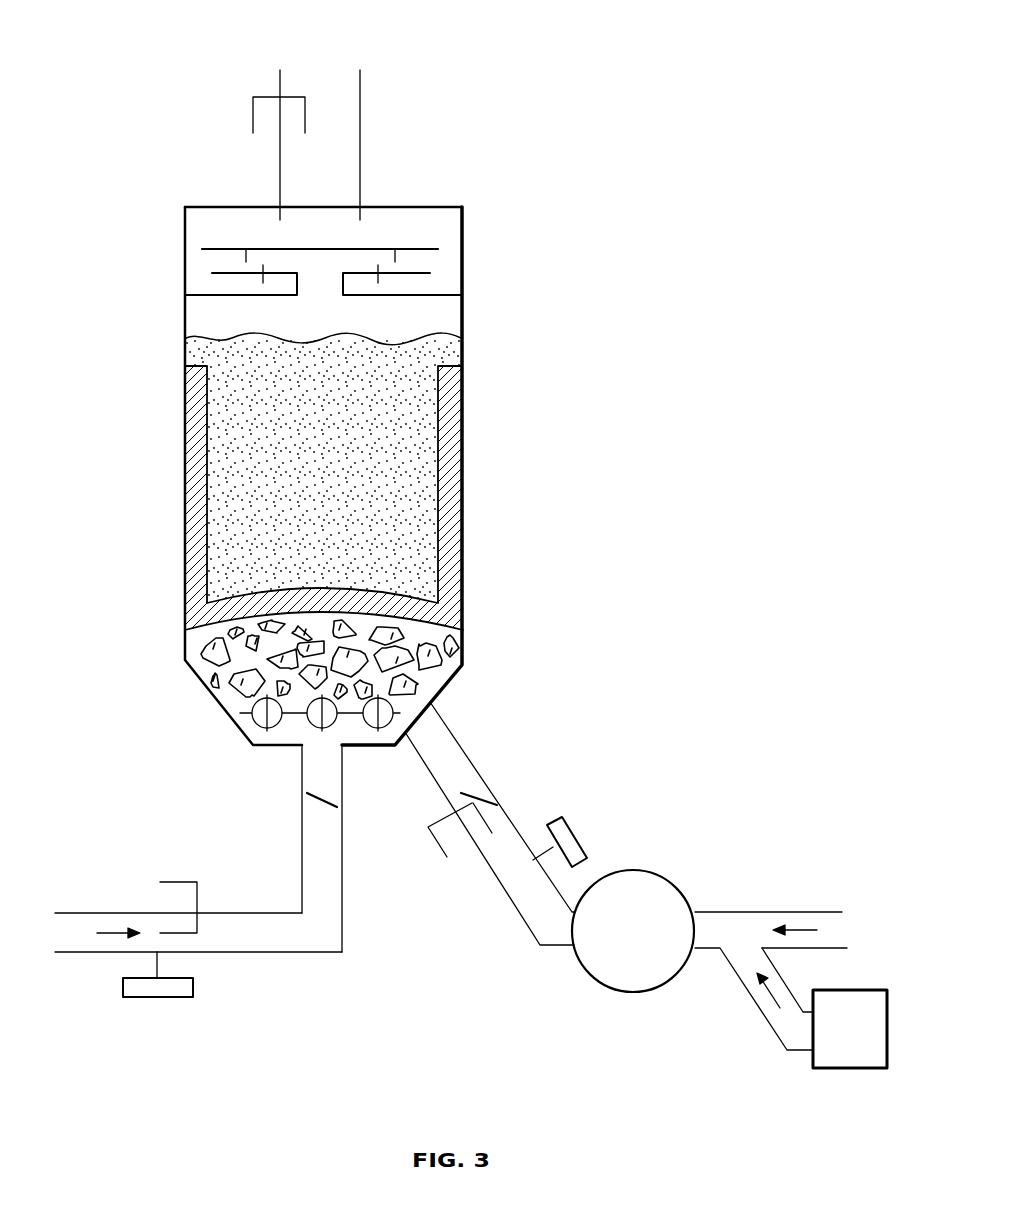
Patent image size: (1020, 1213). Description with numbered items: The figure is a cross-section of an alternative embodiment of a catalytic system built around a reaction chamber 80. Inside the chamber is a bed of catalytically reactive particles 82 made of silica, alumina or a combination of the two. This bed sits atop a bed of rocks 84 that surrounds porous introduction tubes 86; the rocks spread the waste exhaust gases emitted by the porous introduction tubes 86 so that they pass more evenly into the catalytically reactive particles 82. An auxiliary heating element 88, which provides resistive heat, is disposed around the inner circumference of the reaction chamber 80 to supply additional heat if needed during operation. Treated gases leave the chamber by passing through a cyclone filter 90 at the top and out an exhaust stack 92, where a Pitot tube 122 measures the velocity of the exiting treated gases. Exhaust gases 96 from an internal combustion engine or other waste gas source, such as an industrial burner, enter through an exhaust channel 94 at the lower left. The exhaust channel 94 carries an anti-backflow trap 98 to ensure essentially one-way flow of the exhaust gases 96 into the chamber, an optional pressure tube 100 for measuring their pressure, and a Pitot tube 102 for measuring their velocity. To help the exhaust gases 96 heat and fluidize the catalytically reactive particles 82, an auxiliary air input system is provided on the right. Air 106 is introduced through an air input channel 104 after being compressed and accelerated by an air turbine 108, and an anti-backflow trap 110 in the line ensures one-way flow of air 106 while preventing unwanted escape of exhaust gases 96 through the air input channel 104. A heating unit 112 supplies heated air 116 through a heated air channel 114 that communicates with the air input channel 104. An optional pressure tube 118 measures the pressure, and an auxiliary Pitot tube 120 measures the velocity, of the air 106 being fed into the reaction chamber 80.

The reaction chamber 80 is at (160, 432).
The catalytically reactive particles 82 is at (380, 427).
The bed of rocks 84 is at (435, 667).
The porous introduction tubes 86 is at (262, 713).
The auxiliary heating element 88 is at (204, 548).
The cyclone filter 90 is at (358, 265).
The exhaust stack 92 is at (332, 85).
The exhaust channel 94 is at (103, 913).
The exhaust gases 96 is at (113, 933).
The anti-backflow trap 98 is at (320, 803).
The pressure tube 100 is at (156, 1003).
The Pitot tube 102 is at (178, 882).
The air input channel 104 is at (840, 913).
The air 106 is at (795, 928).
The air turbine 108 is at (650, 942).
The anti-backflow trap 110 is at (480, 790).
The heating unit 112 is at (867, 1042).
The heated air channel 114 is at (770, 1030).
The heated air 116 is at (770, 992).
The pressure tube 118 is at (575, 833).
The auxiliary Pitot tube 120 is at (440, 848).
The Pitot tube 122 is at (253, 113).